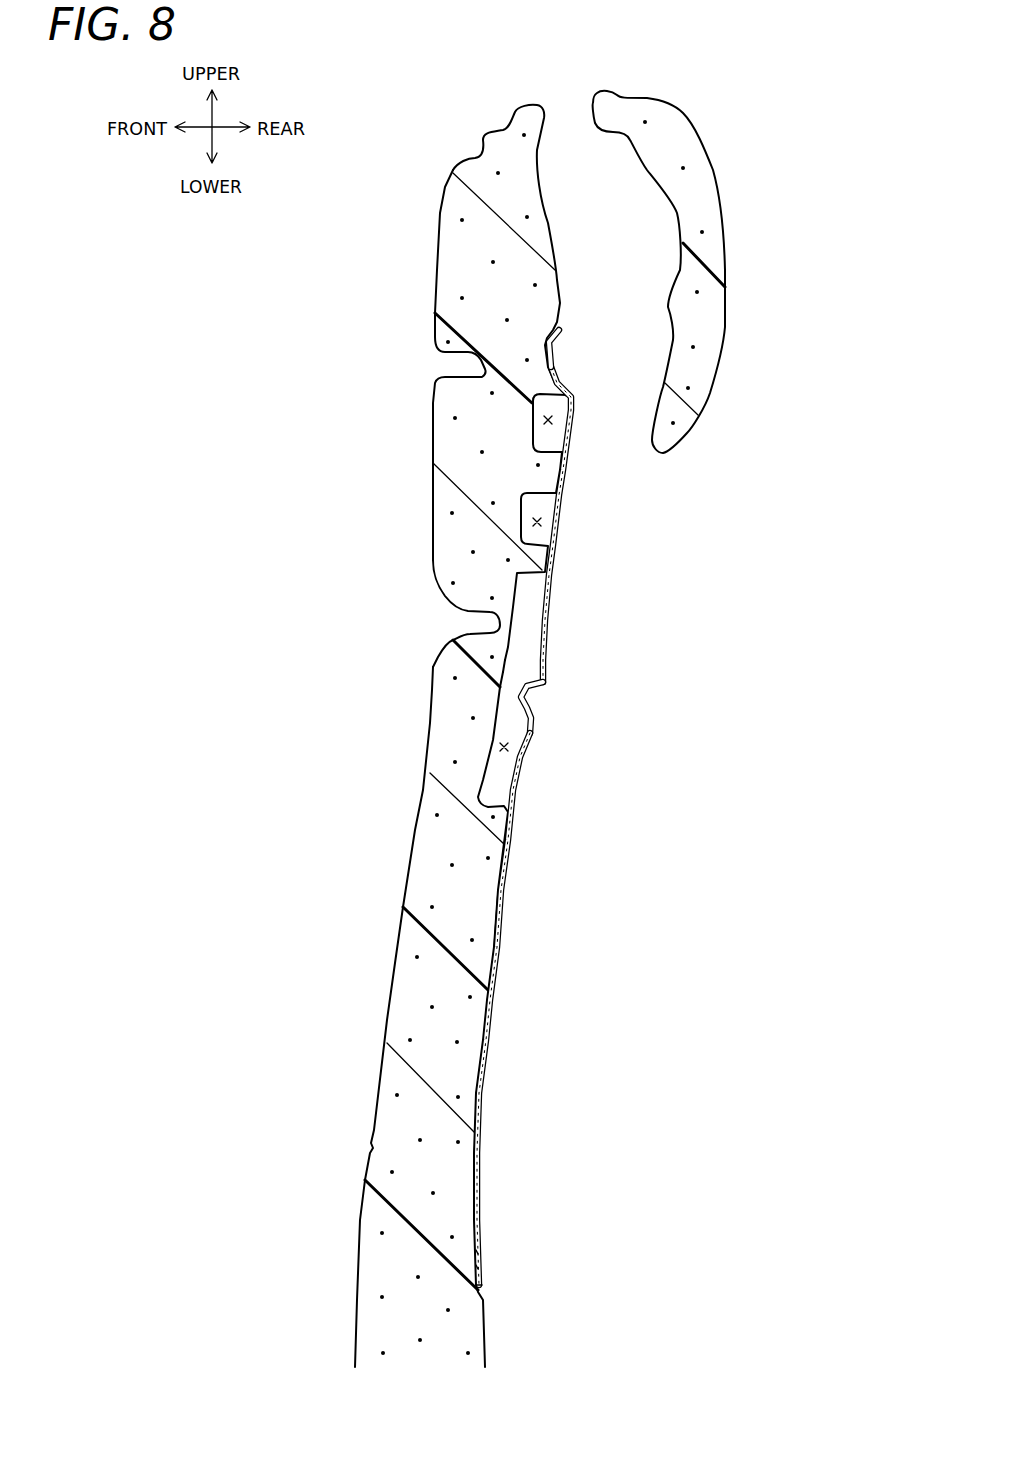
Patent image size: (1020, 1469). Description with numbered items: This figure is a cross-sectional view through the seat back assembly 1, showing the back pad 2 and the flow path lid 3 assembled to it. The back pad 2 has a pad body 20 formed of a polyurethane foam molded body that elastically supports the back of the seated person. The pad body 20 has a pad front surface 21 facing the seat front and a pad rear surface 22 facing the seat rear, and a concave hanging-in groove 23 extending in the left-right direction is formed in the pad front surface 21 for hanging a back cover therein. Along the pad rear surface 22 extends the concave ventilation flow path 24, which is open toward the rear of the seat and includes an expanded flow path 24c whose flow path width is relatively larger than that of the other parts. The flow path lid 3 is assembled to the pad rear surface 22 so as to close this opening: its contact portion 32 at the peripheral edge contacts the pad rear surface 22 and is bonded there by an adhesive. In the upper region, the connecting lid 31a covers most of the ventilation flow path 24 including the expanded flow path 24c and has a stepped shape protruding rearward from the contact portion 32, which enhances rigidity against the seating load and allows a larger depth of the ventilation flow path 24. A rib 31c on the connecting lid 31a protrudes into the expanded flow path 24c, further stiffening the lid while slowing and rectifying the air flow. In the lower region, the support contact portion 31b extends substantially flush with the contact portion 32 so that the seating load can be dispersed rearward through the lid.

The vehicle interior structure 1 is at (830, 73).
The back pad 2 is at (699, 110).
The flow path lid 3 is at (499, 1063).
The pad body 20 is at (498, 143).
The pad front surface 21 is at (415, 830).
The pad rear surface 22 is at (505, 886).
The hanging-in groove 23 is at (497, 623).
The ventilation flow path 24 is at (537, 522).
The expanded flow path 24c is at (504, 747).
The connecting lid 31a is at (566, 512).
The support contact portion 31b is at (500, 947).
The rib 31c is at (523, 685).
The contact portion 32 is at (552, 360).